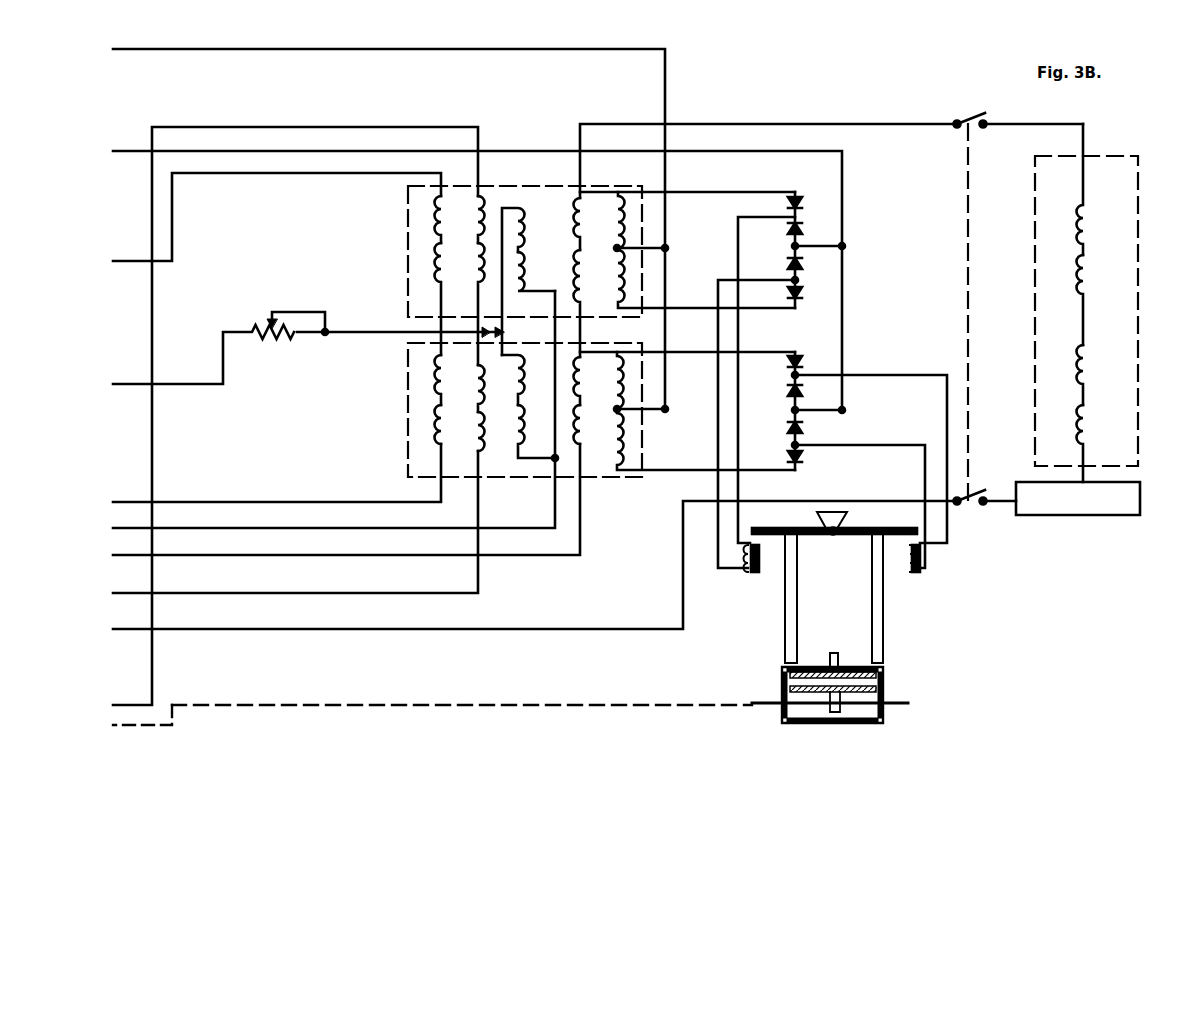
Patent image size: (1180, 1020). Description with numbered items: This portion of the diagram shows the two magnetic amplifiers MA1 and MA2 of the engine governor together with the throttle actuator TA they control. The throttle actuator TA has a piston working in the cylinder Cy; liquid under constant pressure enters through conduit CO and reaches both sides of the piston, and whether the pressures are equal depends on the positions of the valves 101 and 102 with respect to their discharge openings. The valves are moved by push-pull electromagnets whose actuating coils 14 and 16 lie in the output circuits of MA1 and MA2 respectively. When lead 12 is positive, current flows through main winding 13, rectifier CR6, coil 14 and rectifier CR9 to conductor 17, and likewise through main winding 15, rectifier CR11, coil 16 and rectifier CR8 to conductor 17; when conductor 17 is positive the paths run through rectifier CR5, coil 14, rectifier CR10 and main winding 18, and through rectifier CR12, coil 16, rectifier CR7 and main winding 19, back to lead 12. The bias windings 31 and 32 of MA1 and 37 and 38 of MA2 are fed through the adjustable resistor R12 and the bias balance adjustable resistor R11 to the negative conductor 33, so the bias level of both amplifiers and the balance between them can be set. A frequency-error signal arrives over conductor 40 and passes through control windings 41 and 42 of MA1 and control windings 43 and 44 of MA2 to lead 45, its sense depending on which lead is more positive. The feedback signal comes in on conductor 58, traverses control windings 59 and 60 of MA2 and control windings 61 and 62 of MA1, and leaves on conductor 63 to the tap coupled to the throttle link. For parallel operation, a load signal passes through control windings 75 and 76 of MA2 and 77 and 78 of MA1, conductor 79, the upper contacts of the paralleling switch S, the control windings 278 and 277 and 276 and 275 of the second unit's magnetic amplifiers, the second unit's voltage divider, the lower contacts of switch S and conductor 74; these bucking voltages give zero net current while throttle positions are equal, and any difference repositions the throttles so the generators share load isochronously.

The lead 12 is at (200, 49).
The conductor 63 is at (170, 125).
The conductor 17 is at (120, 152).
The conductor 40 is at (172, 246).
The magnetic amplifier MA1 is at (505, 186).
The magnetic amplifier MA2 is at (598, 478).
The control winding 41 is at (451, 219).
The control winding 42 is at (451, 298).
The control winding 43 is at (451, 376).
The control winding 44 is at (451, 421).
The control winding 62 is at (493, 214).
The control winding 61 is at (476, 286).
The control winding 60 is at (493, 385).
The control winding 59 is at (493, 426).
The bias winding 31 is at (525, 275).
The bias winding 32 is at (536, 269).
The negative conductor 33 is at (552, 300).
The bias winding 37 is at (525, 375).
The bias winding 38 is at (536, 428).
The bias balance adjustable resistor R11 is at (423, 331).
The adjustable resistor R12 is at (273, 340).
The lead 45 is at (176, 501).
The conductor 58 is at (178, 555).
The conductor 74 is at (176, 629).
The conductor 79 is at (731, 124).
The control winding 78 is at (596, 218).
The control winding 77 is at (591, 298).
The control winding 76 is at (596, 375).
The control winding 75 is at (591, 421).
The main winding 13 is at (616, 221).
The main winding 18 is at (616, 287).
The main winding 15 is at (616, 377).
The main winding 19 is at (616, 442).
The rectifier CR5 is at (788, 228).
The rectifier CR6 is at (786, 204).
The rectifier CR7 is at (786, 459).
The rectifier CR8 is at (786, 429).
The rectifier CR9 is at (786, 264).
The rectifier CR10 is at (786, 294).
The rectifier CR11 is at (786, 363).
The rectifier CR12 is at (786, 392).
The paralleling switch S is at (960, 118).
The control winding 278 is at (1086, 213).
The control winding 277 is at (1102, 295).
The control winding 276 is at (1102, 370).
The control winding 275 is at (1102, 440).
The throttle actuator TA is at (834, 617).
The actuating coil 14 is at (754, 574).
The actuating coil 16 is at (908, 574).
The valve 101 is at (797, 645).
The valve 102 is at (884, 645).
The conduit CO is at (835, 656).
The cylinder Cy is at (884, 682).